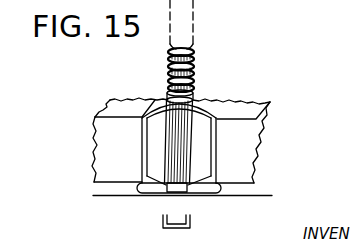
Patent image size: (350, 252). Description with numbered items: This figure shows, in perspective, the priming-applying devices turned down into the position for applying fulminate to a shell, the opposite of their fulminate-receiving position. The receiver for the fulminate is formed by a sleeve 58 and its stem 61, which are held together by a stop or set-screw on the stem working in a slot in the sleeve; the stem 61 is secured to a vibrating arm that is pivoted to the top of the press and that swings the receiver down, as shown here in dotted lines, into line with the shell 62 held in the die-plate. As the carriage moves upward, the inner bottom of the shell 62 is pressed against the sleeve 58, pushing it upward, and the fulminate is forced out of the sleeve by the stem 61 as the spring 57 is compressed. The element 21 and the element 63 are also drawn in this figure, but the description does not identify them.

The block 21 is at (182, 147).
The spring 57 is at (193, 72).
The sleeve 58 is at (161, 132).
The stem 61 is at (167, 70).
The shell 62 is at (179, 148).
The clip 63 is at (177, 232).